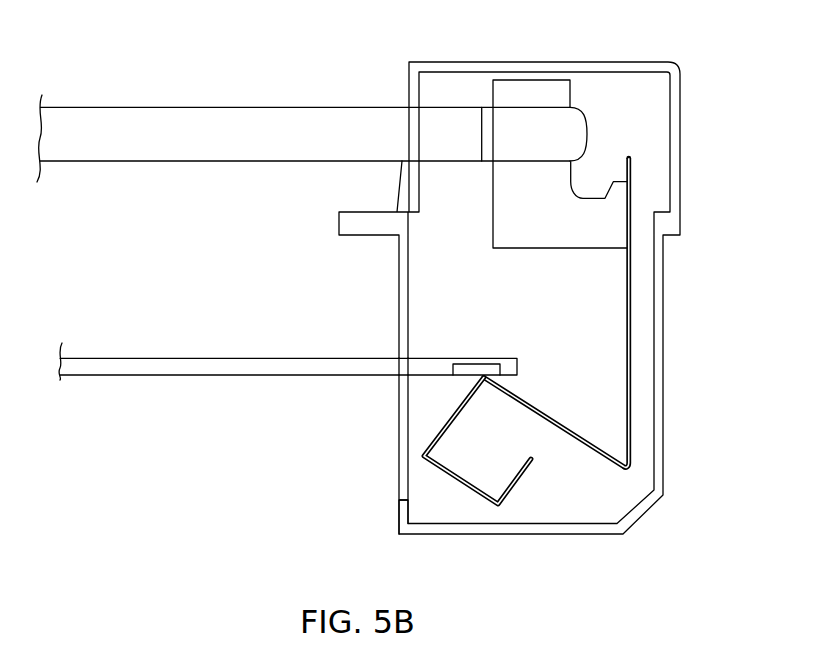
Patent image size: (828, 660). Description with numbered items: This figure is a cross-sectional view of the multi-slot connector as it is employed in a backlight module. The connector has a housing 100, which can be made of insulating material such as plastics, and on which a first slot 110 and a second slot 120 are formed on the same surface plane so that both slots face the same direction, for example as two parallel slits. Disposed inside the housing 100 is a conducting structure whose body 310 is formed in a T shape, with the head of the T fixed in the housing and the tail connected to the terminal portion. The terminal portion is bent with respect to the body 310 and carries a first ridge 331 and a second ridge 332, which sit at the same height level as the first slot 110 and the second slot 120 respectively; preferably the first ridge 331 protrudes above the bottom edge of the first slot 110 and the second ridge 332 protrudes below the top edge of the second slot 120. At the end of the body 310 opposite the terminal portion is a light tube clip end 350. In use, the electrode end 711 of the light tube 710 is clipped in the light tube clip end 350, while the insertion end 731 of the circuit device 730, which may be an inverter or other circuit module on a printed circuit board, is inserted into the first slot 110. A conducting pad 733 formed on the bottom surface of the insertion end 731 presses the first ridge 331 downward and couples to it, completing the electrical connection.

The housing 100 is at (660, 262).
The first slot 110 is at (394, 385).
The second slot 120 is at (389, 517).
The body 310 is at (630, 393).
The first ridge 331 is at (481, 376).
The second ridge 332 is at (500, 507).
The light tube clip end 350 is at (540, 88).
The light tube 710 is at (242, 128).
The electrode end 711 is at (575, 127).
The circuit device 730 is at (325, 367).
The insertion end 731 is at (512, 365).
The conducting pad 733 is at (497, 370).